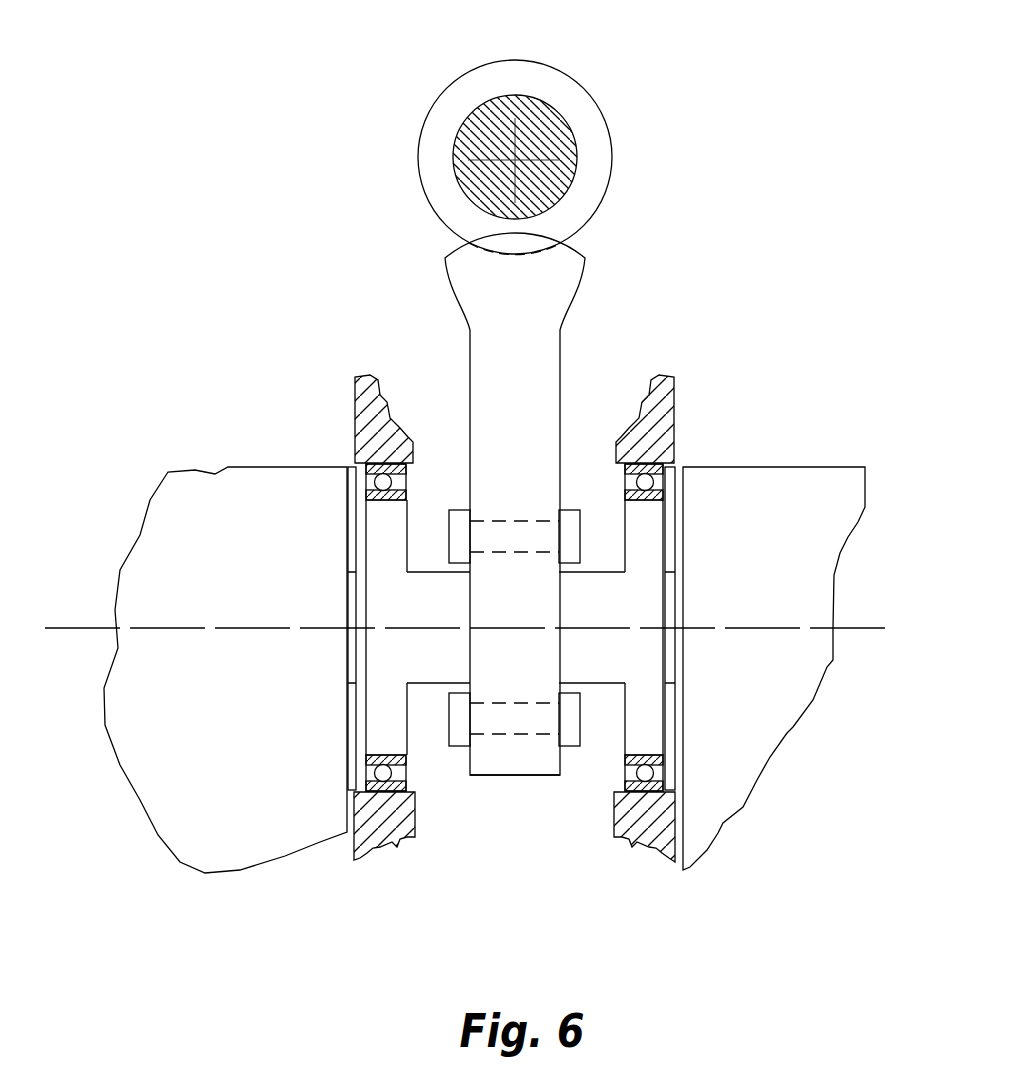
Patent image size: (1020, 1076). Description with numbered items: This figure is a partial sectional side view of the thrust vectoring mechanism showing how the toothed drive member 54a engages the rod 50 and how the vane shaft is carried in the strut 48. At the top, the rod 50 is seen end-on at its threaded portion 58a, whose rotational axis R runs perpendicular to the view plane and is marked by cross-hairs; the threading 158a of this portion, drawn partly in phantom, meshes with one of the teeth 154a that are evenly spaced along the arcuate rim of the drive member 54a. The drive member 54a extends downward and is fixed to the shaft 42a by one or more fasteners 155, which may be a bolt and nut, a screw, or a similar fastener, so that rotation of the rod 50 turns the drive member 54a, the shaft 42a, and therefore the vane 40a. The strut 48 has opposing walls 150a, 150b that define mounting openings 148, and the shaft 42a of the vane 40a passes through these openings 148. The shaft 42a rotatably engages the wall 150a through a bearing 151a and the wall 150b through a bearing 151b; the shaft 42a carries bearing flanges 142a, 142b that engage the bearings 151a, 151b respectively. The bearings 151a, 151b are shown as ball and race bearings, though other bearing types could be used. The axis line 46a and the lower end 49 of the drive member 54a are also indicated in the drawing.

The rod 50 is at (532, 128).
The threaded portion 58a is at (443, 90).
The rotational axis R is at (516, 158).
The threading 158a is at (601, 220).
The teeth 154a is at (586, 265).
The toothed drive member 54a is at (562, 357).
The wall 150a is at (354, 418).
The wall 150b is at (675, 403).
The bearing 151a is at (407, 487).
The bearing 151b is at (625, 480).
The bearing flange 142a is at (356, 523).
The bearing flange 142b is at (664, 544).
The shaft 42a is at (440, 572).
The vane 40a is at (264, 571).
The axis 46a is at (862, 628).
The fastener 155 is at (457, 746).
The lower end of arm 49 is at (530, 799).
The mounting opening 148 is at (675, 782).
The strut 48 is at (388, 858).